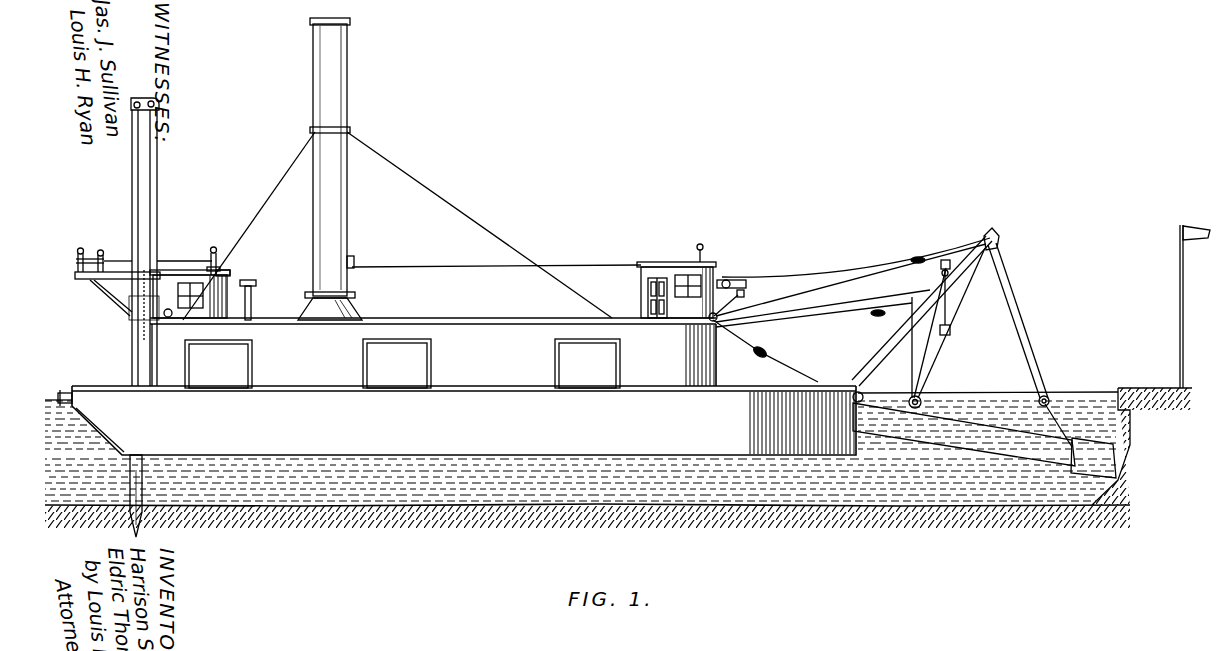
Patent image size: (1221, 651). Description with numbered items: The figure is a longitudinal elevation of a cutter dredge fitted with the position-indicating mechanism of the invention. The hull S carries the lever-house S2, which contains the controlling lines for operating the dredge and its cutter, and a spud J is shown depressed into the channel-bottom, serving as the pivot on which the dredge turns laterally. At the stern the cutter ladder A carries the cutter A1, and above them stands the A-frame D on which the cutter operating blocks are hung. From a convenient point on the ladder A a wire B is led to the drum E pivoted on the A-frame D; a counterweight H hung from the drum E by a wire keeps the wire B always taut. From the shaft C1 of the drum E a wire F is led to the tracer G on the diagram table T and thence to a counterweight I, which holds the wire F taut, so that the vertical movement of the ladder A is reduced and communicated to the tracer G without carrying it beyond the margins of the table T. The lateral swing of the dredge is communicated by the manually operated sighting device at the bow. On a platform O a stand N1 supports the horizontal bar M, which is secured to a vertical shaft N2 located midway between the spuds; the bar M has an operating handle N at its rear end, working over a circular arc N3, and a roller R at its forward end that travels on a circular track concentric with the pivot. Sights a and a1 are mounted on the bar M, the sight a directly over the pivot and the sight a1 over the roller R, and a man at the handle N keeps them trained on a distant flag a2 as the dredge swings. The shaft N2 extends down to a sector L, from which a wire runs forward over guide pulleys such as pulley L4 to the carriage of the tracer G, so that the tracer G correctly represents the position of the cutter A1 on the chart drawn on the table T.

The hull S is at (457, 420).
The lever-house S2 is at (648, 270).
The spud J is at (140, 492).
The sector L is at (130, 297).
The guide pulley L4 is at (258, 320).
The operating handle N is at (83, 244).
The stand N1 is at (133, 272).
The vertical shaft N2 is at (132, 318).
The circular arc N3 is at (78, 273).
The platform O is at (100, 288).
The sight a is at (140, 240).
The sight a1 is at (214, 249).
The flag a2 is at (1180, 286).
The horizontal bar M is at (172, 260).
The roller R is at (228, 272).
The tracer G is at (730, 280).
The table T is at (748, 286).
The counterweight I is at (743, 296).
The wire F is at (843, 273).
The drum E is at (946, 260).
The shaft C1 is at (943, 276).
The A-frame D is at (897, 337).
The counterweight H is at (952, 332).
The wire B is at (938, 358).
The cutter ladder A is at (964, 434).
The cutter A1 is at (1093, 458).